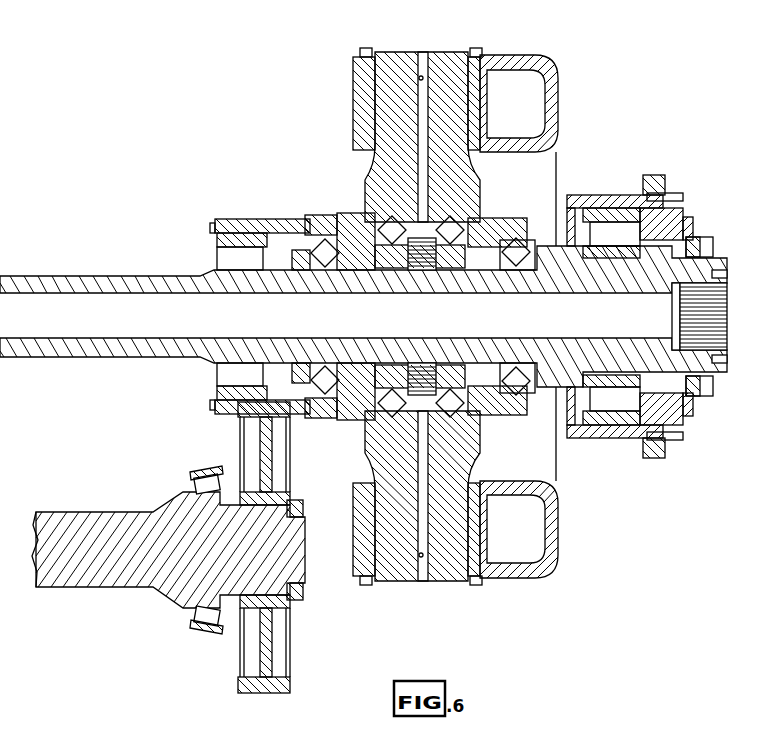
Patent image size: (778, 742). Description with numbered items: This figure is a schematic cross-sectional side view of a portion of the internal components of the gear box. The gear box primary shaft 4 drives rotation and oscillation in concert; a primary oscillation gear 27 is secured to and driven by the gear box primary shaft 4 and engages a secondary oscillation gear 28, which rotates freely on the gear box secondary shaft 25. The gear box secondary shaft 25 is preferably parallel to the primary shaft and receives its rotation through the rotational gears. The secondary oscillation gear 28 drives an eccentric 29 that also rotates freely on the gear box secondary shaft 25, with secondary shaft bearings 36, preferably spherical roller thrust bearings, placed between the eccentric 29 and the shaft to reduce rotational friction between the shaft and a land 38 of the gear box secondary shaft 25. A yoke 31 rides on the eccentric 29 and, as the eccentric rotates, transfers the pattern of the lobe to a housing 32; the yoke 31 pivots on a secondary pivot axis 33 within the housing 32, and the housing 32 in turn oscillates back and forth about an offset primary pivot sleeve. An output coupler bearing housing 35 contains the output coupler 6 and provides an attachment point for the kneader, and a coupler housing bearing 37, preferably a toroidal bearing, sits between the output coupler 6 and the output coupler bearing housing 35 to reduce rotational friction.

The gear box primary shaft 4 is at (103, 512).
The output coupler 6 is at (728, 320).
The gear box secondary shaft 25 is at (102, 350).
The primary oscillation gear 27 is at (254, 690).
The secondary oscillation gear 28 is at (256, 219).
The eccentric 29 is at (351, 215).
The yoke 31 is at (374, 206).
The housing 32 is at (548, 180).
The secondary pivot axis 33 is at (402, 52).
The output coupler bearing housing 35 is at (607, 195).
The secondary shaft bearings 36 is at (458, 218).
The coupler housing bearing 37 is at (612, 232).
The land 38 is at (557, 396).